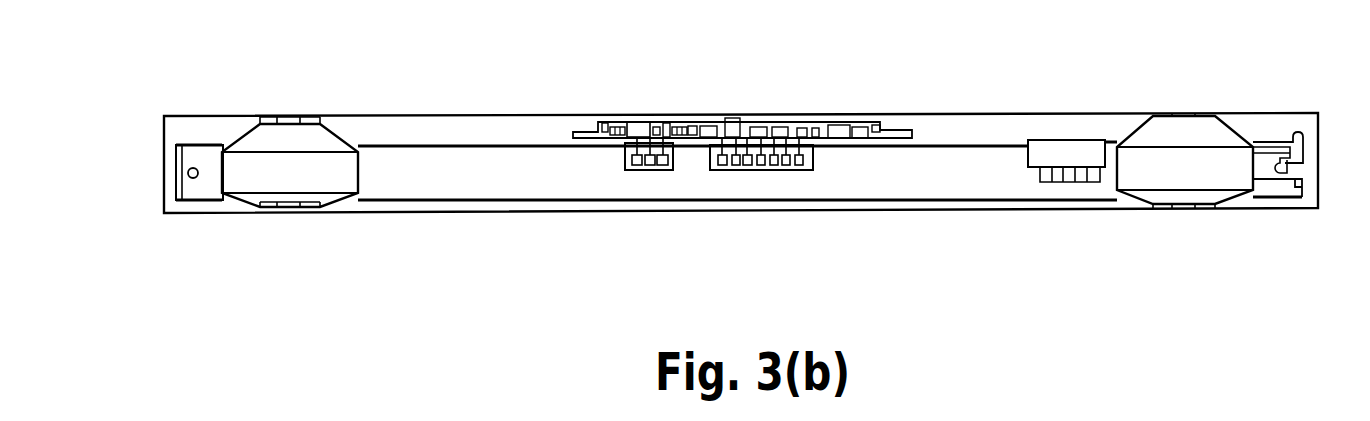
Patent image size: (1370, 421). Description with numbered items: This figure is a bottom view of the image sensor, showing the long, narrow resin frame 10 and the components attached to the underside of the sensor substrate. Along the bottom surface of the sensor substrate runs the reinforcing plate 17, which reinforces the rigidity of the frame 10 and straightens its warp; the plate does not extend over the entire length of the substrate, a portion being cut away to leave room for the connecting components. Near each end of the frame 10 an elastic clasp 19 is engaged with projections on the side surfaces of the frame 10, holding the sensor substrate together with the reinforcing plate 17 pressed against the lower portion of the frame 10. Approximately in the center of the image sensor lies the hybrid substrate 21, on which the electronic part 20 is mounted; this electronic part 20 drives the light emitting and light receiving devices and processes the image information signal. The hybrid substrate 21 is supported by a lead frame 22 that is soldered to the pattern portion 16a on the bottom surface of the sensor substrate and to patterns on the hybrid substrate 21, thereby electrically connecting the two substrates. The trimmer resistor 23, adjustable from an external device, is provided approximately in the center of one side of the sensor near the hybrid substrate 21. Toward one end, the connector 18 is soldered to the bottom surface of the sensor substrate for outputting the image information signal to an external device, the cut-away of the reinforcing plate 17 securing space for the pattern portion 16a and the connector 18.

The frame 10 is at (438, 130).
The reinforcing plate 17 is at (517, 165).
The elastic clasp 19 is at (313, 165).
The connector 18 is at (1063, 153).
The electronic part 20 is at (922, 105).
The hybrid substrate 21 is at (742, 82).
The trimmer resistor 23 is at (713, 128).
The lead frame 22 is at (627, 152).
The pattern portion 16a is at (655, 172).